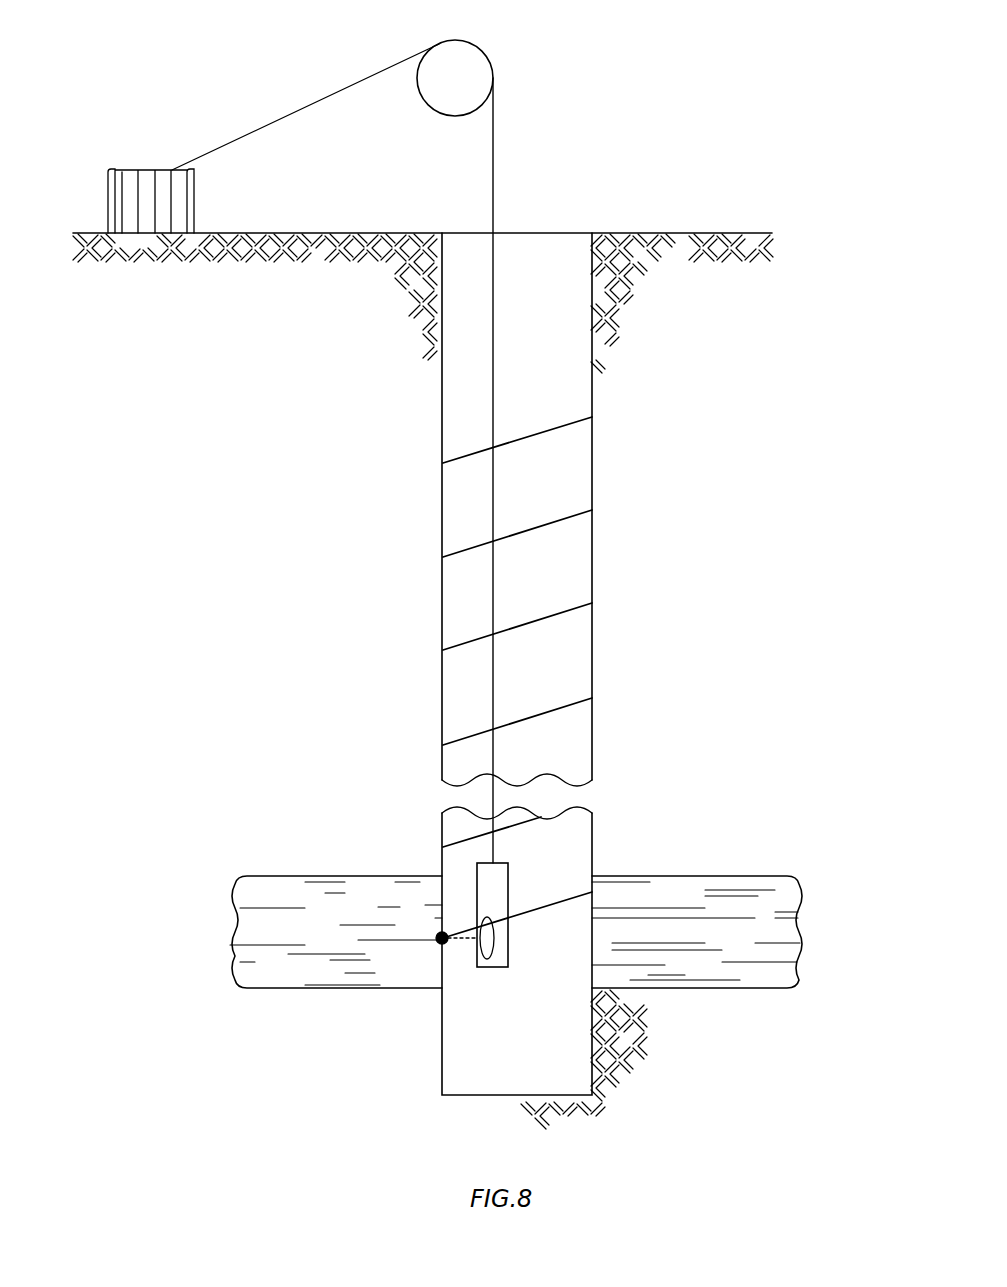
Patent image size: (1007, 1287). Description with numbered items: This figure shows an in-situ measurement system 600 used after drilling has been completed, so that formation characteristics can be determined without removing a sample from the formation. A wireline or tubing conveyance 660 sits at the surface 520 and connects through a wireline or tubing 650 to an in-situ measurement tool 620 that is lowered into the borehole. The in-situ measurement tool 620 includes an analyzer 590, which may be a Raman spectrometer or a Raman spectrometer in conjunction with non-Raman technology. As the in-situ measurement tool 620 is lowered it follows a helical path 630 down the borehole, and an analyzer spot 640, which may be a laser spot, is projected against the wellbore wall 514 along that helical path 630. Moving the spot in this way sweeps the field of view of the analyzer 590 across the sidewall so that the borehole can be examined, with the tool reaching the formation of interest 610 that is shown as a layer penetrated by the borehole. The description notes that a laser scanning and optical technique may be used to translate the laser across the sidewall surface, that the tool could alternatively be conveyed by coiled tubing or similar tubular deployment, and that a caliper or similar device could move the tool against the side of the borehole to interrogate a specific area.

The in-situ measurement system 600 is at (597, 110).
The wireline or tubing 650 is at (494, 199).
The wireline or tubing conveyance 660 is at (132, 170).
The surface 520 is at (728, 233).
The wellbore wall 514 is at (443, 418).
The helical path 630 is at (460, 556).
The analyzer spot 640 is at (440, 936).
The formation of interest 610 is at (745, 876).
The in-situ measurement tool 620 is at (508, 944).
The analyzer 590 is at (492, 968).